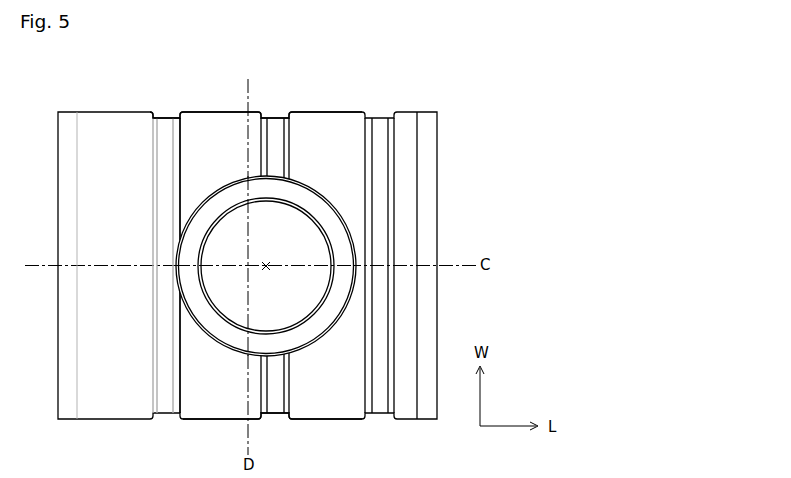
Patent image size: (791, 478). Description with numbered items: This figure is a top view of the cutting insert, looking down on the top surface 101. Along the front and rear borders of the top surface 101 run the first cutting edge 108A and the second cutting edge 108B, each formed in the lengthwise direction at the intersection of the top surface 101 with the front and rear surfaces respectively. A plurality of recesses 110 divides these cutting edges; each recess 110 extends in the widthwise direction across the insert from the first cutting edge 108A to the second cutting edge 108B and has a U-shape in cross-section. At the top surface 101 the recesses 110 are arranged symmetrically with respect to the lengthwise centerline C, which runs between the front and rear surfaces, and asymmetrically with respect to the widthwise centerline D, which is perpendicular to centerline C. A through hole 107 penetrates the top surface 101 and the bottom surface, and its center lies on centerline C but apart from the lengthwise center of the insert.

The top surface 101 is at (353, 149).
The through hole 107 is at (305, 239).
The first cutting edge 108A is at (326, 111).
The second cutting edge 108B is at (326, 422).
The recesses 110 is at (166, 116).